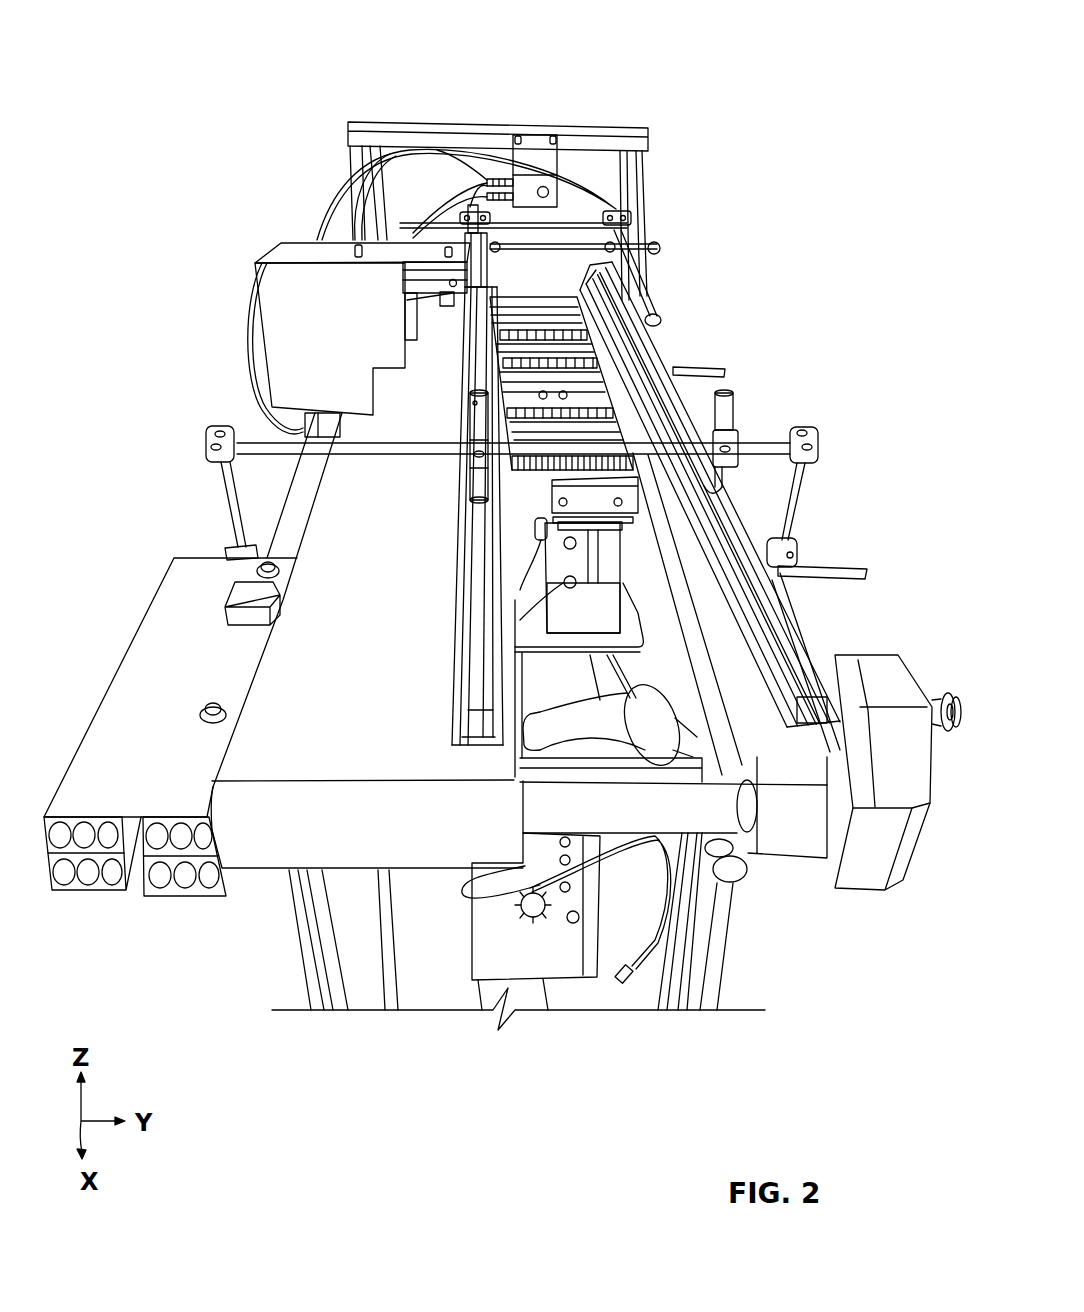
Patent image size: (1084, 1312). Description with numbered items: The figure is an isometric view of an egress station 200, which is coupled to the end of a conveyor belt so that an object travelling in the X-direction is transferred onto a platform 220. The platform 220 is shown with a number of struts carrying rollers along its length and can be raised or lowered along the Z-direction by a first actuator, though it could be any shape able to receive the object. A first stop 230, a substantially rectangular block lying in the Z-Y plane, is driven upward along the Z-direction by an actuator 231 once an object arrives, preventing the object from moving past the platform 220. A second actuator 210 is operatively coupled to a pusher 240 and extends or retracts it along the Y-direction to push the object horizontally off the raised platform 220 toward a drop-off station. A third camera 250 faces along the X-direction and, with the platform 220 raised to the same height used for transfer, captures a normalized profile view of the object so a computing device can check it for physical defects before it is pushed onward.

The egress station 200 is at (231, 58).
The second actuator 210 is at (278, 290).
The platform 220 is at (600, 400).
The first stop 230 is at (598, 507).
The actuator 231 is at (598, 540).
The pusher 240 is at (468, 207).
The third camera 250 is at (585, 180).